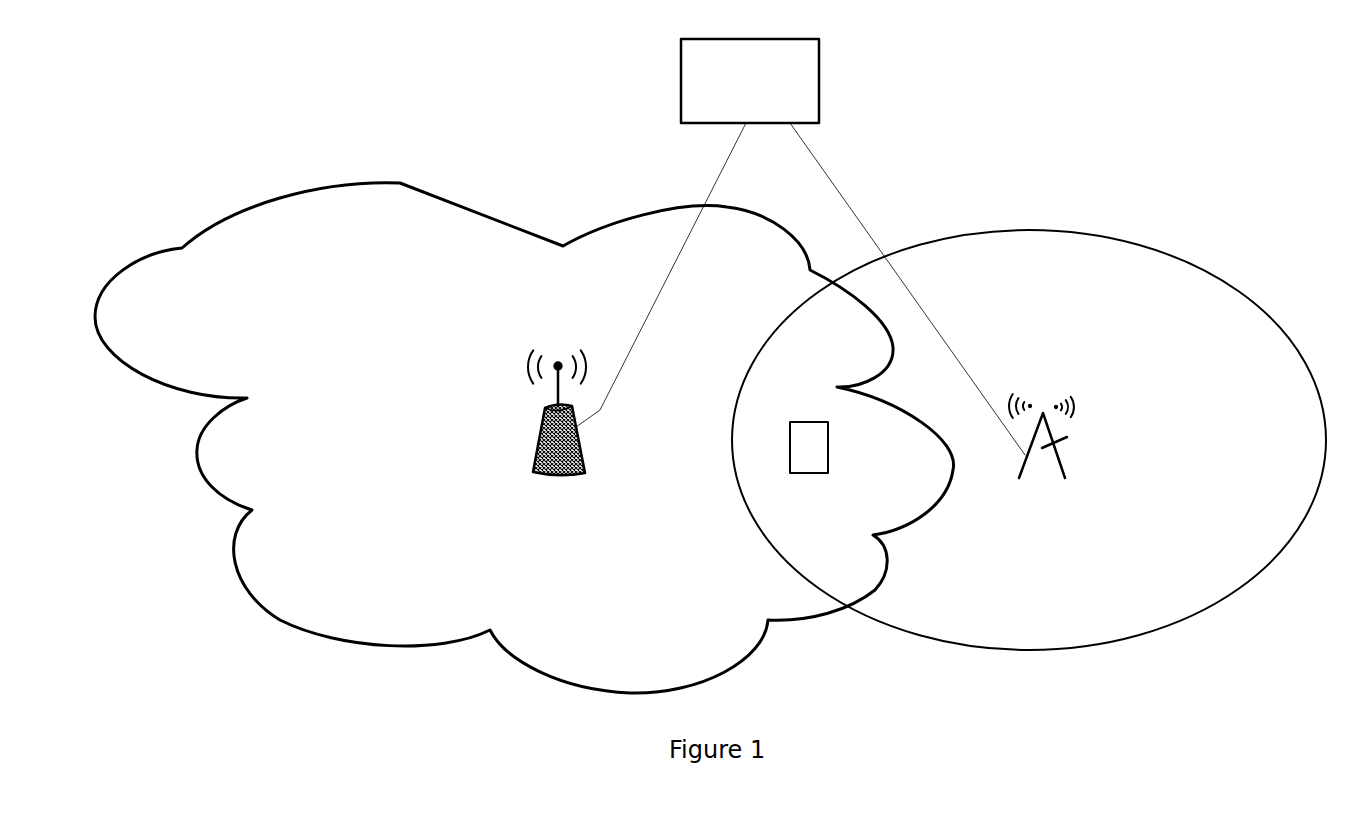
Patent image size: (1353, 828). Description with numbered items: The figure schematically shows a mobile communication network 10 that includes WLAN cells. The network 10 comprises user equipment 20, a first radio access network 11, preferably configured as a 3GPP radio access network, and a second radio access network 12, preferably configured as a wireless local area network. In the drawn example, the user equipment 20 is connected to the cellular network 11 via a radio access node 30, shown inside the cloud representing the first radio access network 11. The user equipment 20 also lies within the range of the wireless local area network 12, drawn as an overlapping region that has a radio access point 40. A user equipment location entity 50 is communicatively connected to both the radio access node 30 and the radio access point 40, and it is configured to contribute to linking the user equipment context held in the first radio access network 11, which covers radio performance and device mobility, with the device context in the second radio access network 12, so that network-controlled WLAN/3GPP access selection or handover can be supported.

The mobile communication network 10 is at (982, 151).
The first radio access network 11 is at (457, 198).
The second radio access network 12 is at (1120, 233).
The user equipment 20 is at (803, 473).
The radio access node 30 is at (540, 440).
The radio access point 40 is at (1067, 437).
The user equipment location entity 50 is at (818, 83).